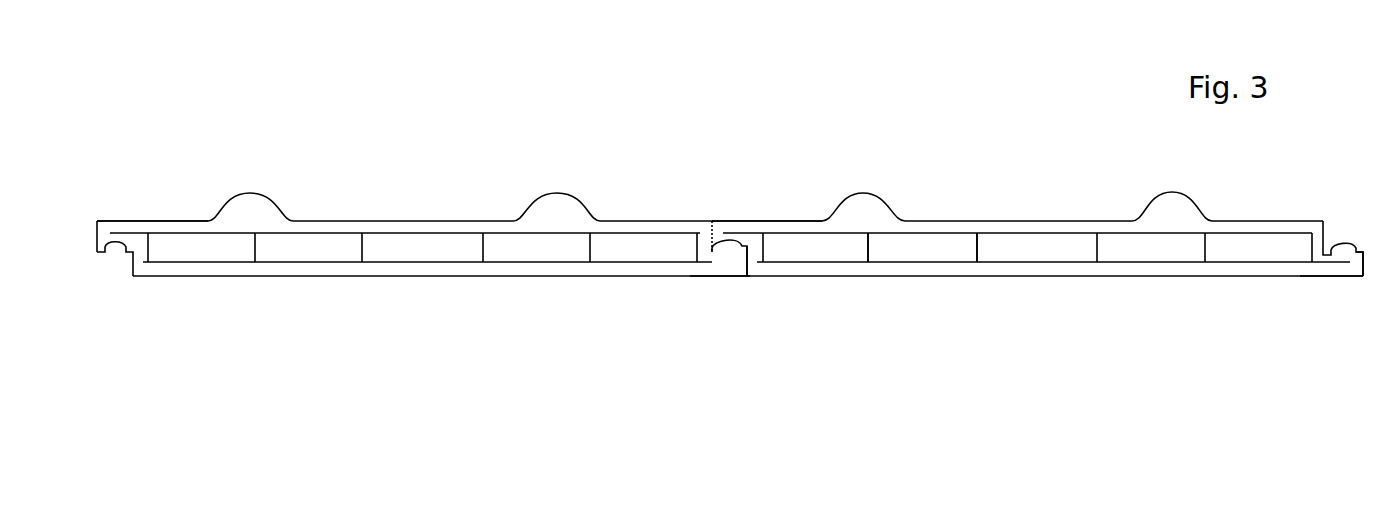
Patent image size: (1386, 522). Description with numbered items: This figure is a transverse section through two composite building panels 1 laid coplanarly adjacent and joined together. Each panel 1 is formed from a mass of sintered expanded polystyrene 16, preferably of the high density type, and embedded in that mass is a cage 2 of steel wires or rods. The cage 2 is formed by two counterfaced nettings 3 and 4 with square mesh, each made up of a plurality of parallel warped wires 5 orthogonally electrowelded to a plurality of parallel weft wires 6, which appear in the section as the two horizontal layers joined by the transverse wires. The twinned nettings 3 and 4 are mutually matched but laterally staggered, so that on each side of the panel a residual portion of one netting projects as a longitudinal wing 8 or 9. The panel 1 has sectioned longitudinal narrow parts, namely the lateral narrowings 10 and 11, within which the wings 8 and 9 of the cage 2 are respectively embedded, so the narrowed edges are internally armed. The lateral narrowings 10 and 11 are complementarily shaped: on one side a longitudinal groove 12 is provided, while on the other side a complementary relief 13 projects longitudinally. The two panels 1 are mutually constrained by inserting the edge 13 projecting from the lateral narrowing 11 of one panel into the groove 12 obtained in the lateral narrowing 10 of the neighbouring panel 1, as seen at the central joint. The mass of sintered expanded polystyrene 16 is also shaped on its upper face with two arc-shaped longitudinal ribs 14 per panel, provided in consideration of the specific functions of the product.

The composite building panel 1 is at (390, 172).
The cage 2 is at (557, 199).
The netting 3 is at (428, 225).
The netting 4 is at (284, 268).
The warped wires 5 is at (233, 233).
The weft wires 6 is at (820, 233).
The longitudinal wing 8 is at (128, 222).
The longitudinal wing 9 is at (712, 262).
The lateral narrowing 10 is at (102, 222).
The lateral narrowing 11 is at (736, 266).
The longitudinal groove 12 is at (115, 242).
The complementary relief 13 is at (744, 248).
The arc-shaped longitudinal ribs 14 is at (250, 203).
The sintered expanded polystyrene 16 is at (403, 272).